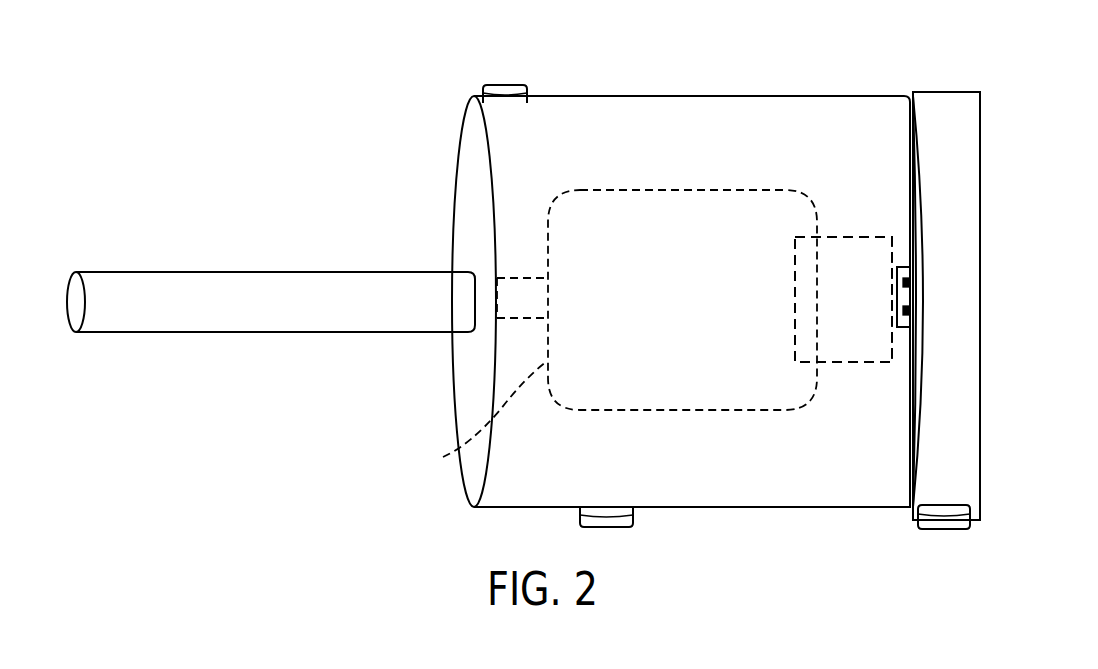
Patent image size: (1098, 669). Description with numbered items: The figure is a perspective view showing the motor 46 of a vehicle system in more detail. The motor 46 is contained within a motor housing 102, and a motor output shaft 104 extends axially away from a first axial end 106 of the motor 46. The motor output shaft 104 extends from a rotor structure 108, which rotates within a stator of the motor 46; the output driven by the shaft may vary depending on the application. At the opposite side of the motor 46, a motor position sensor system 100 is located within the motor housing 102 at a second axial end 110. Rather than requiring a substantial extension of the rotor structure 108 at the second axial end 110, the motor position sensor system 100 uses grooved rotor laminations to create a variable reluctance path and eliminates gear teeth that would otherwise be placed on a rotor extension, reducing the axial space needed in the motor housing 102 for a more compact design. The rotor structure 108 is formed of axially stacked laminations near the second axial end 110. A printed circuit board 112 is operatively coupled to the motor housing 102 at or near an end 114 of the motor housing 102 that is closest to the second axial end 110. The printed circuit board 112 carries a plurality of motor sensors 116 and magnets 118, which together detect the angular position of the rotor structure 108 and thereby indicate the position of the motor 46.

The motor position sensor system 100 is at (842, 200).
The motor housing 102 is at (598, 95).
The motor output shaft 104 is at (251, 312).
The first axial end 106 is at (478, 419).
The rotor structure 108 is at (505, 258).
The second axial end 110 is at (818, 378).
The printed circuit board 112 is at (908, 283).
The end of the motor housing 114 is at (945, 403).
The motor sensors 116 is at (891, 237).
The magnets 118 is at (908, 312).
The motor 46 is at (630, 203).